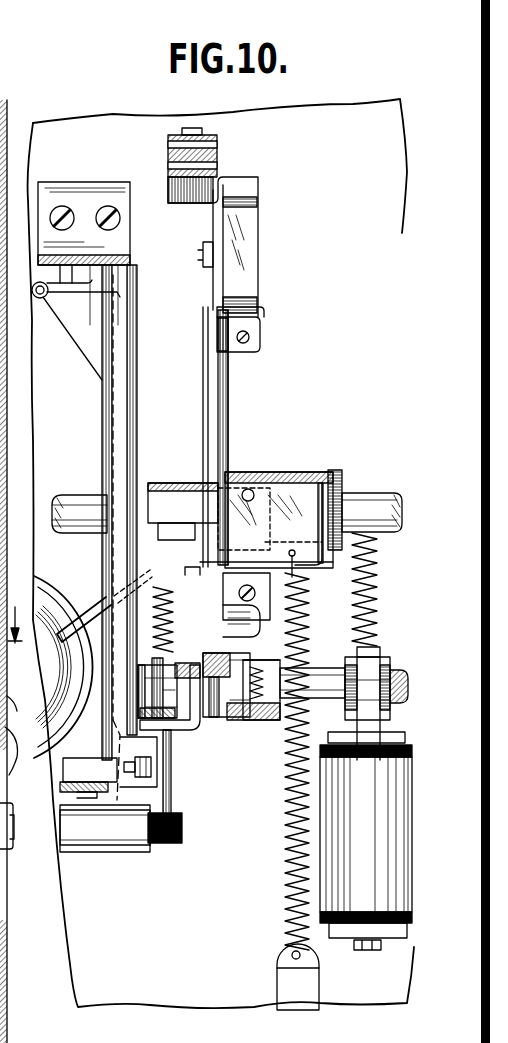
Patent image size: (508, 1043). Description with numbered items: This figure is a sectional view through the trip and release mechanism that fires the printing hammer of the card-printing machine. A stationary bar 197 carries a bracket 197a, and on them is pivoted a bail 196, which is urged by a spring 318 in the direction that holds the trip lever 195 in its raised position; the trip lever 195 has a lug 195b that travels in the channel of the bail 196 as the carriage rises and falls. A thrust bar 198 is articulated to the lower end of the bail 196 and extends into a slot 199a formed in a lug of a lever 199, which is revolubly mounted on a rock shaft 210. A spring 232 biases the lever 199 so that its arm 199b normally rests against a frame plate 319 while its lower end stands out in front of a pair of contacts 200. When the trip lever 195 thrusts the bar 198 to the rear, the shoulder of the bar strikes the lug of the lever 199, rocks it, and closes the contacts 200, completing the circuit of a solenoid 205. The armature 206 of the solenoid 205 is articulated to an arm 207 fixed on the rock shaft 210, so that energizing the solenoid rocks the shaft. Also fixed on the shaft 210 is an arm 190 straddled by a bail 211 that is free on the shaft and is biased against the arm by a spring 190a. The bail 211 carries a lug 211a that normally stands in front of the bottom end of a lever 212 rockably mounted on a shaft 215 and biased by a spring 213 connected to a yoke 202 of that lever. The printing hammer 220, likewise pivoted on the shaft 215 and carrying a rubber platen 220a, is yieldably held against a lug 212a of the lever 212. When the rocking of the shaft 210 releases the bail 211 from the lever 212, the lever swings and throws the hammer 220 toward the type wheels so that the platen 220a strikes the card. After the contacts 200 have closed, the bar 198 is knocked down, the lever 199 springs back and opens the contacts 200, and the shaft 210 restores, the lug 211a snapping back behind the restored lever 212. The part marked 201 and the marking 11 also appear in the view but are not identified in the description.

The direction arrow 11 is at (16, 634).
The arm 190 is at (246, 605).
The spring 190a is at (258, 705).
The trip lever 195 is at (187, 732).
The lug 195b is at (105, 828).
The bail 196 is at (127, 436).
The stationary bar 197 is at (113, 257).
The bracket 197a is at (70, 795).
The thrust bar 198 is at (152, 783).
The lever 199 is at (172, 802).
The slot 199a is at (137, 850).
The arm 199b is at (26, 708).
The contacts 200 is at (173, 845).
The housing 201 is at (249, 478).
The yoke 202 is at (310, 553).
The solenoid 205 is at (360, 888).
The armature 206 is at (363, 723).
The arm 207 is at (387, 677).
The rock shaft 210 is at (322, 677).
The bail 211 is at (270, 722).
The lug 211a is at (222, 665).
The lever 212 is at (207, 395).
The lug 212a is at (262, 322).
The spring 213 is at (288, 848).
The shaft 215 is at (358, 503).
The printing hammer 220 is at (225, 190).
The rubber platen 220a is at (217, 157).
The spring 232 is at (108, 598).
The spring 318 is at (42, 298).
The frame plate 319 is at (22, 751).